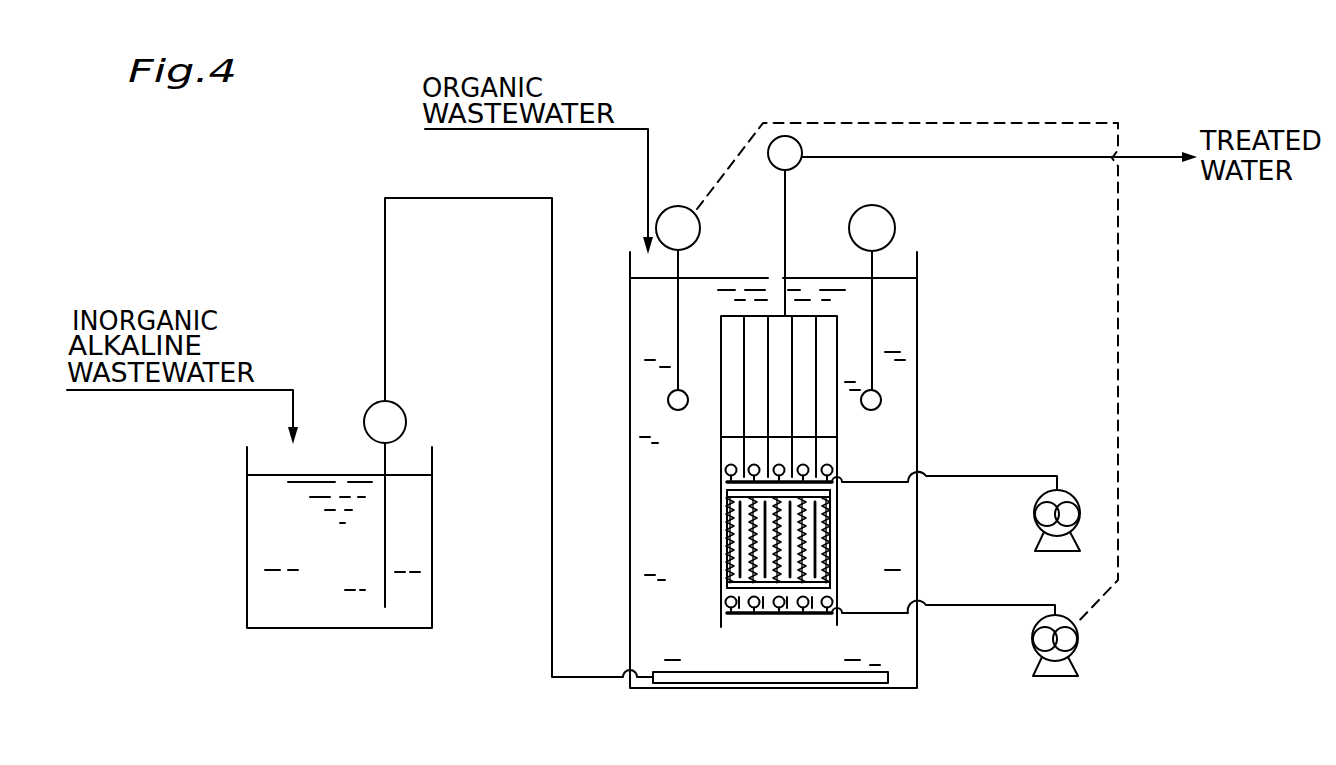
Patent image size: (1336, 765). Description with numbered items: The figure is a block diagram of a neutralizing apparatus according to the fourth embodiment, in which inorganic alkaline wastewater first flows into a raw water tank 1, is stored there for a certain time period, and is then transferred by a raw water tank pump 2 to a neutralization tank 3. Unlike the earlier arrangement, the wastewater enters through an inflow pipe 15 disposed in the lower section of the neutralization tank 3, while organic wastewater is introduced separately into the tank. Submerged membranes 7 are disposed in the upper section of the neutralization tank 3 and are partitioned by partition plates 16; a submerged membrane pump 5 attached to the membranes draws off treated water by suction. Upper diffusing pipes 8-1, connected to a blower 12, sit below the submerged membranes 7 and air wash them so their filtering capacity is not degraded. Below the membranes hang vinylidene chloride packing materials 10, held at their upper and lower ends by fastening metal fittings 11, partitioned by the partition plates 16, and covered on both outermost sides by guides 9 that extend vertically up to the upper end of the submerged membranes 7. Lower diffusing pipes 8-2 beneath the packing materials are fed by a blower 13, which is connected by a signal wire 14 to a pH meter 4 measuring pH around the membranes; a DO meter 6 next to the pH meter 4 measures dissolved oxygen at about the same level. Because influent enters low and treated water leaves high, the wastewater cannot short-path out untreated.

The raw water tank 1 is at (432, 538).
The raw water tank pump 2 is at (406, 421).
The neutralization tank 3 is at (628, 385).
The pH meter 4 is at (700, 233).
The submerged membrane pump 5 is at (800, 167).
The DO meter 6 is at (895, 229).
The submerged membranes 7 is at (827, 322).
The upper diffusing pipes 8-1 is at (728, 472).
The lower diffusing pipes 8-2 is at (740, 616).
The guides 9 is at (727, 530).
The vinylidene chloride packing materials 10 is at (723, 560).
The fastening metal fittings 11 is at (725, 494).
The blower 12 is at (1035, 516).
The blower 13 is at (1033, 637).
The signal wire 14 is at (1117, 310).
The inflow pipe 15 is at (825, 678).
The partition plates 16 is at (817, 455).